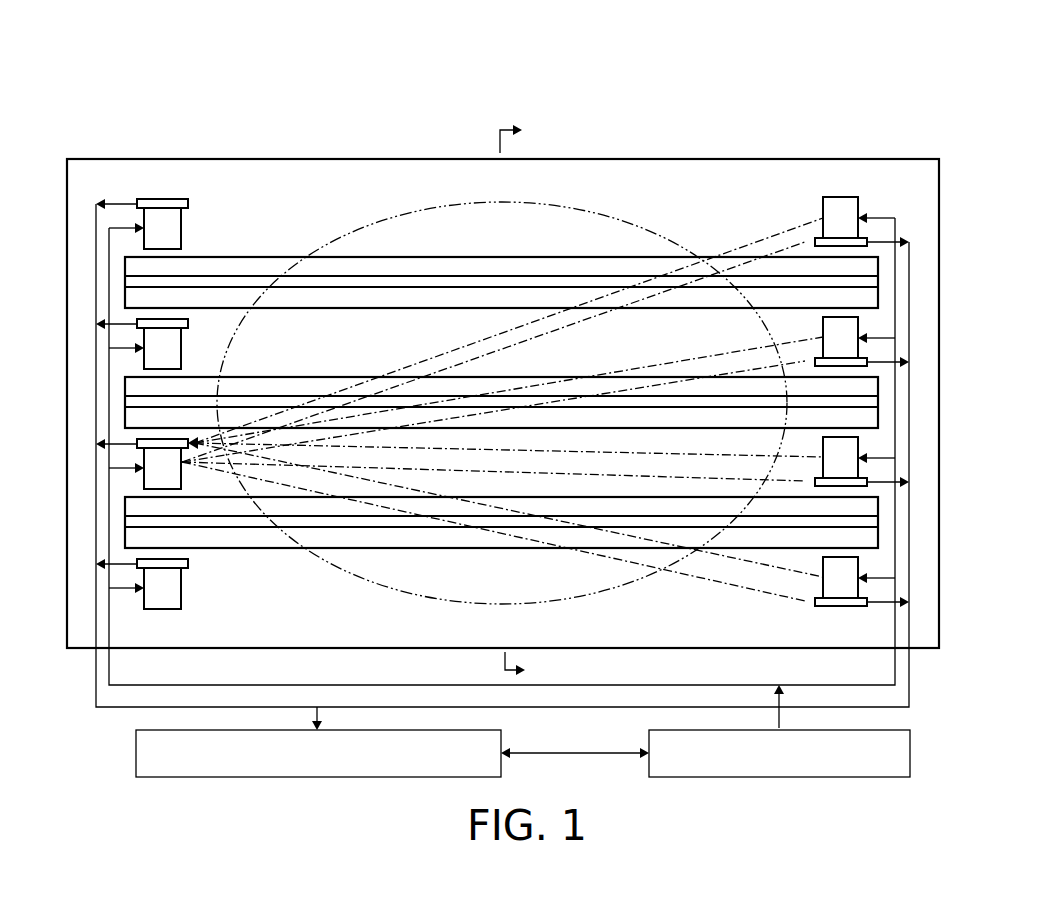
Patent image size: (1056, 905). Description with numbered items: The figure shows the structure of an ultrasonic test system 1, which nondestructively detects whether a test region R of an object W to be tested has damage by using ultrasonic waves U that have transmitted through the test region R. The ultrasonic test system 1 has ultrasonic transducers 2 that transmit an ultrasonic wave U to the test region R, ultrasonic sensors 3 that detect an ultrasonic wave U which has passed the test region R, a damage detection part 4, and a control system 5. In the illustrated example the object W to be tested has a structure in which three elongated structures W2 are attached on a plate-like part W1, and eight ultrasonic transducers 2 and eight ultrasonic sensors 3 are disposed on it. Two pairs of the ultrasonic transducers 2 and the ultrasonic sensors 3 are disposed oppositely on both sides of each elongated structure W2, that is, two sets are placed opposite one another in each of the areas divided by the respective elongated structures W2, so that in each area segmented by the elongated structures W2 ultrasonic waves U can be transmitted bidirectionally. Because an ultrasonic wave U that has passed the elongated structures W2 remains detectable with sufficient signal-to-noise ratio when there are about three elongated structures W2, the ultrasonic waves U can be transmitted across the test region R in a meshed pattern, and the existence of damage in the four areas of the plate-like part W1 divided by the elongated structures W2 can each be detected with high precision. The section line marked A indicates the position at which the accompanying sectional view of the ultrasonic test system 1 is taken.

The ultrasonic test system 1 is at (549, 404).
The ultrasonic transducer 2 is at (181, 215).
The ultrasonic sensor 3 is at (158, 199).
The damage detection part 4 is at (130, 752).
The control system 5 is at (916, 750).
The object to be tested W is at (513, 369).
The plate-like part W1 is at (900, 158).
The elongated structure W2 is at (268, 257).
The test region R is at (477, 220).
The ultrasonic wave U is at (760, 245).
The position A- A is at (524, 402).